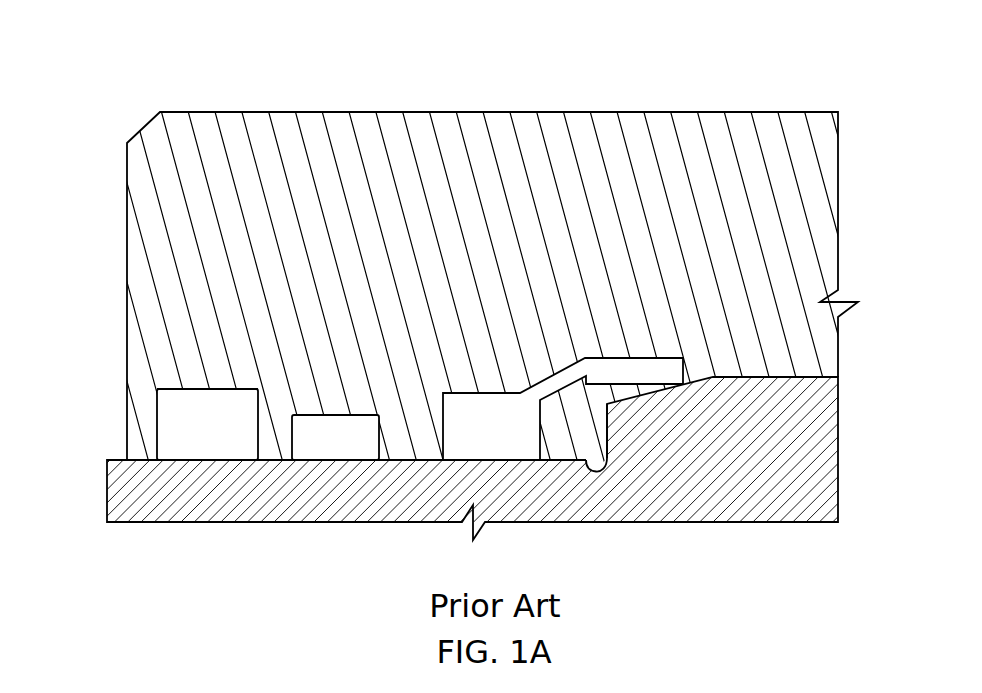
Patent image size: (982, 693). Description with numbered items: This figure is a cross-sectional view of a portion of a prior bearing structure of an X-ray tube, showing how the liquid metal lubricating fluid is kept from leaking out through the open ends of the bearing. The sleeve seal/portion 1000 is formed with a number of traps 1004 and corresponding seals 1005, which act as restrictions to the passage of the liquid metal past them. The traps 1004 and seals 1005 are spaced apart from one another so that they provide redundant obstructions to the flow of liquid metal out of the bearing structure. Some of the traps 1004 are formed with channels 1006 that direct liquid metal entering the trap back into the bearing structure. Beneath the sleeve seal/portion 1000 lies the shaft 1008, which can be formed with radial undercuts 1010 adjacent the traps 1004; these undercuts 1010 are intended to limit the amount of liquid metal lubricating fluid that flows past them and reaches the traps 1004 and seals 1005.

The sleeve seal/portion 1000 is at (743, 136).
The traps 1004 is at (618, 358).
The seals 1005 is at (290, 461).
The channels 1006 is at (519, 391).
The shaft 1008 is at (107, 494).
The radial undercuts 1010 is at (598, 472).